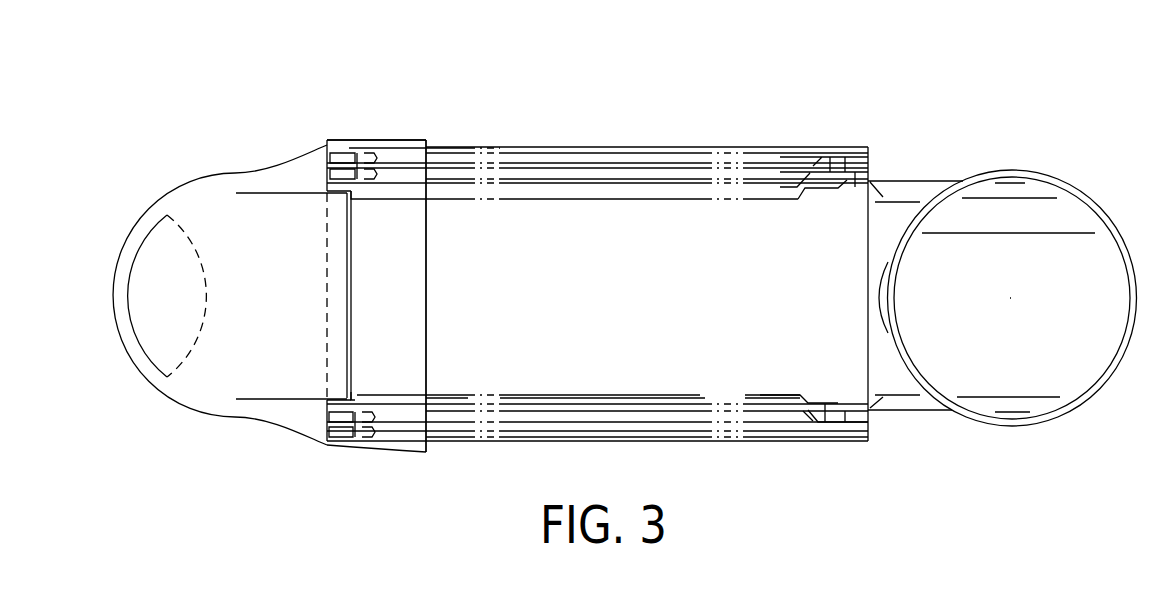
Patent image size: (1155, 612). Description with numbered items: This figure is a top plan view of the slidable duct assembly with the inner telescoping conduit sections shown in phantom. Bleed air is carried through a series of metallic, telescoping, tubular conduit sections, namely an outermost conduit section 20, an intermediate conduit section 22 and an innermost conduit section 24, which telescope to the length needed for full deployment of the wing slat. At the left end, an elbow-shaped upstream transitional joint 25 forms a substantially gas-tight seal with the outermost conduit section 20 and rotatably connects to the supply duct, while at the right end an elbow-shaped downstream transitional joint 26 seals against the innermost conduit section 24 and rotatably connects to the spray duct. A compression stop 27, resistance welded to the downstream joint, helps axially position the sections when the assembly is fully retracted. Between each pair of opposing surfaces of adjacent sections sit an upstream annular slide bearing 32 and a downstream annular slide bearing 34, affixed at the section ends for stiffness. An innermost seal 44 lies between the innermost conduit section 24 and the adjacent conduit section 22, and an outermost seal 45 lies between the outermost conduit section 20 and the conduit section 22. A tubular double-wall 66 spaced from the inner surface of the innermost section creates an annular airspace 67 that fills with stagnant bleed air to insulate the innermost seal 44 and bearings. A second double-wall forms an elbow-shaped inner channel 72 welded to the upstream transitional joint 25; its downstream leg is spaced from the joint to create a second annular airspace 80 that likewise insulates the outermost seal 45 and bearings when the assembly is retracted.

The outermost conduit section 20 is at (665, 147).
The conduit section 22 is at (533, 153).
The innermost conduit section 24 is at (664, 200).
The upstream transitional joint 25 is at (270, 428).
The downstream transitional joint 26 is at (1105, 215).
The compression stop 27 is at (875, 270).
The upstream annular slide bearing 32 is at (343, 173).
The downstream annular slide bearing 34 is at (833, 173).
The innermost seal 44 is at (383, 180).
The outermost seal 45 is at (396, 140).
The tubular double-wall 66 is at (560, 393).
The annular airspace 67 is at (615, 397).
The elbow-shaped inner channel 72 is at (305, 200).
The second annular airspace 80 is at (300, 417).